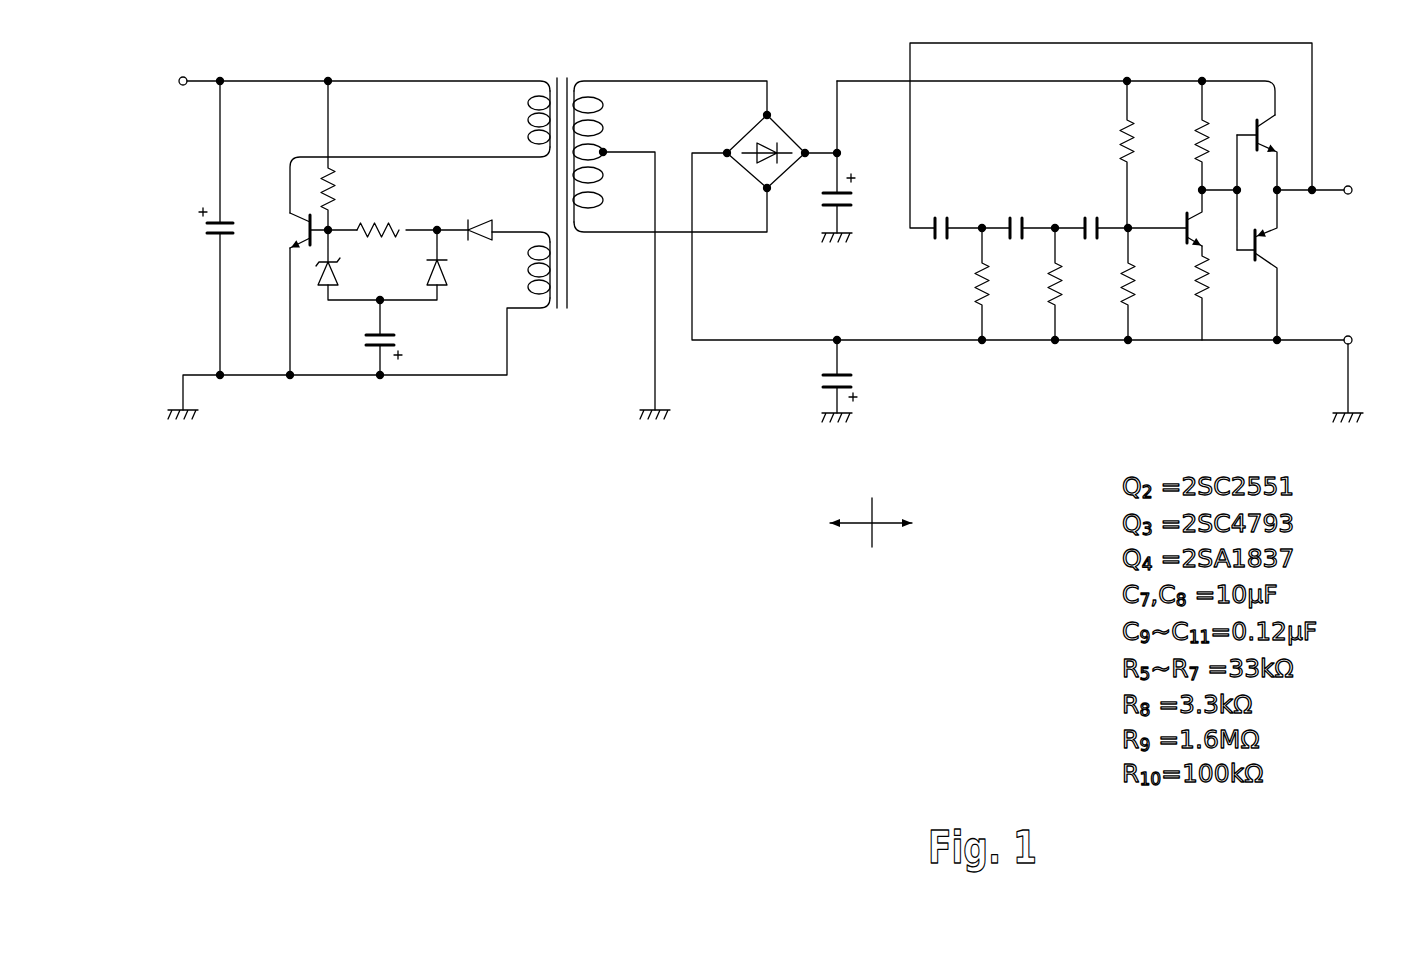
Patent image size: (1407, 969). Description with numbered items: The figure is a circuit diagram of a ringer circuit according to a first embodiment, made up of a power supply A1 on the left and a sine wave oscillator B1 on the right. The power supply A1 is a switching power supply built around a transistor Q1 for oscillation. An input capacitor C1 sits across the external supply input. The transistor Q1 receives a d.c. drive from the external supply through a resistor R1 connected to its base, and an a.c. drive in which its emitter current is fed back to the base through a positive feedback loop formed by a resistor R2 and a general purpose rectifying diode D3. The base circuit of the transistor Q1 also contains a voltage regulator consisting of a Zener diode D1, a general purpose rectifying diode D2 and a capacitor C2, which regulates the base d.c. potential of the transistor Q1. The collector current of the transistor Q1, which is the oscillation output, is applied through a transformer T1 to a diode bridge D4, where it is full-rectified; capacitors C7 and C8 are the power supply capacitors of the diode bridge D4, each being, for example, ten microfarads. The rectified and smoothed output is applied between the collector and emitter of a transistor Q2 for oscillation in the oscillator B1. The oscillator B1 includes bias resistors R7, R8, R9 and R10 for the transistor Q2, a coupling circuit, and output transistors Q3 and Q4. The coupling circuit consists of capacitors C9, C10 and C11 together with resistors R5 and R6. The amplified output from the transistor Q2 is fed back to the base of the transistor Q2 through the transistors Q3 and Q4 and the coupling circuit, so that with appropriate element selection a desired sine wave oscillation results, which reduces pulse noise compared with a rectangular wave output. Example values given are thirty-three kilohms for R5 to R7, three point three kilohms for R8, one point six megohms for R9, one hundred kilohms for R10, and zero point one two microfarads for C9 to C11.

The power supply A1 is at (521, 306).
The oscillator B1 is at (1087, 306).
The capacitor C1 is at (200, 228).
The capacitor C2 is at (367, 337).
The capacitor C7 is at (853, 161).
The capacitor C8 is at (819, 381).
The capacitor C9 is at (938, 209).
The capacitor C10 is at (1018, 209).
The capacitor C11 is at (1093, 209).
The Zener diode D1 is at (344, 274).
The general purpose rectifying diode D2 is at (454, 275).
The general purpose rectifying diode D3 is at (483, 211).
The diode bridge D4 is at (781, 146).
The transistor Q1 is at (290, 231).
The transistor Q2 is at (1175, 213).
The output transistor Q3 is at (1251, 139).
The output transistor Q4 is at (1255, 265).
The resistor R1 is at (344, 155).
The resistor R2 is at (380, 212).
The resistor R5 is at (963, 284).
The resistor R6 is at (1037, 284).
The bias resistor R7 is at (1111, 284).
The bias resistor R8 is at (1186, 293).
The bias resistor R9 is at (1104, 154).
The bias resistor R10 is at (1181, 135).
The transformer T1 is at (567, 175).